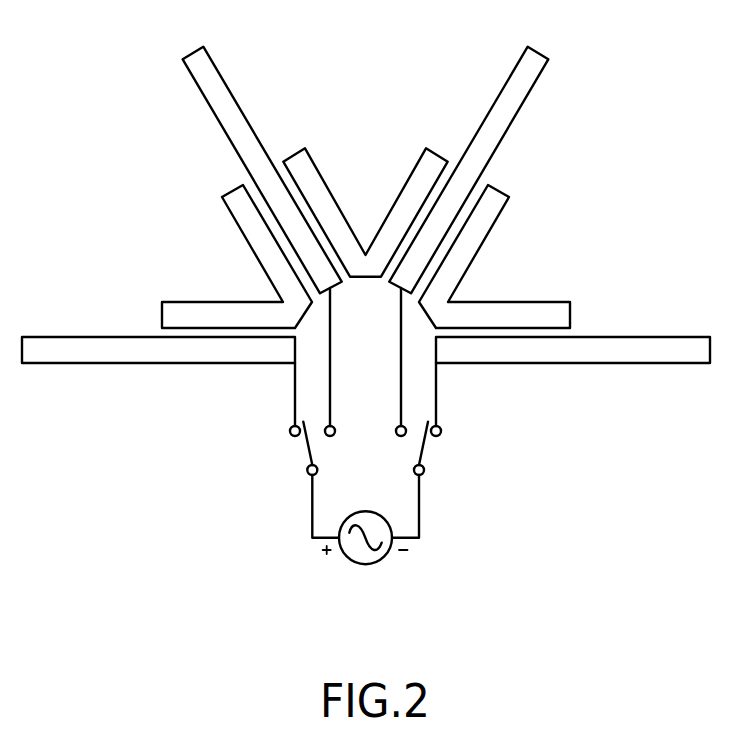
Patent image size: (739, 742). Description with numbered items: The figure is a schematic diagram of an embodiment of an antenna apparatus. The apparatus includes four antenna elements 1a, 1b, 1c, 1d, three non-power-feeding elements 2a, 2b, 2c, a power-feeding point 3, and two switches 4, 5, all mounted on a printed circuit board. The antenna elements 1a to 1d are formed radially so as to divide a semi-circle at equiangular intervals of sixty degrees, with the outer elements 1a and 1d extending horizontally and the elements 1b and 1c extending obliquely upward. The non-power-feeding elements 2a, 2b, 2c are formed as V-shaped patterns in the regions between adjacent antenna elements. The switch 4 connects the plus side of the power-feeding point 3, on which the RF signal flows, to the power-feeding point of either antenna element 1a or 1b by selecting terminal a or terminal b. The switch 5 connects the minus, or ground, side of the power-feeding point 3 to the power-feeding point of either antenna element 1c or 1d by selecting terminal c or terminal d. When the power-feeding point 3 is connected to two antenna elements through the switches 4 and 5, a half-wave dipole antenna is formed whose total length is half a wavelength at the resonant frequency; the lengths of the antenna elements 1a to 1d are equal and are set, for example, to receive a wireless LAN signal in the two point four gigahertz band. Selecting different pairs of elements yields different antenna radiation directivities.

The antenna element 1a is at (50, 337).
The antenna element 1b is at (215, 63).
The antenna element 1c is at (516, 63).
The antenna element 1d is at (681, 337).
The non-power-feeding element 2a is at (182, 302).
The non-power-feeding element 2b is at (415, 163).
The non-power-feeding element 2c is at (549, 302).
The power-feeding point 3 is at (365, 565).
The switch 4 is at (310, 453).
The switch 5 is at (421, 453).
The terminal a is at (289, 428).
The terminal b is at (337, 428).
The terminal c is at (393, 428).
The terminal d is at (443, 428).